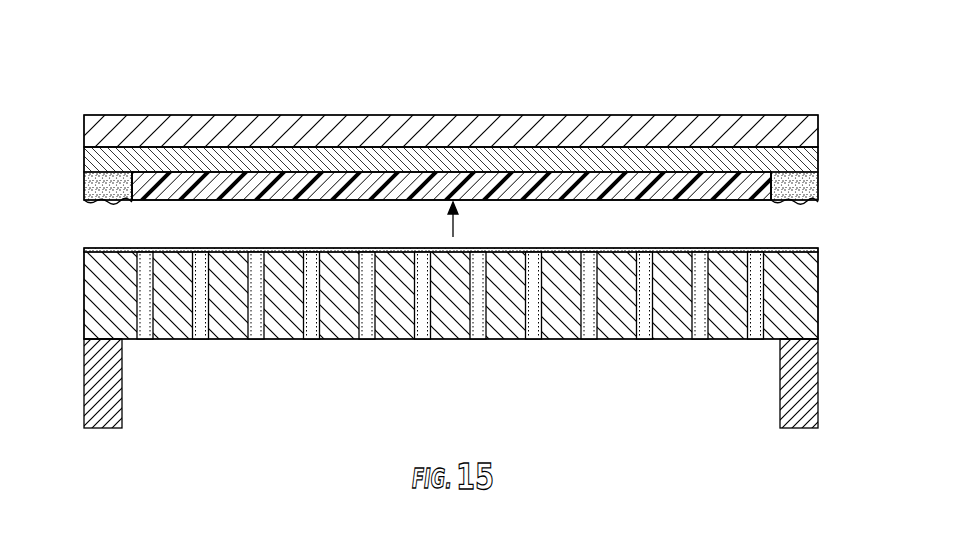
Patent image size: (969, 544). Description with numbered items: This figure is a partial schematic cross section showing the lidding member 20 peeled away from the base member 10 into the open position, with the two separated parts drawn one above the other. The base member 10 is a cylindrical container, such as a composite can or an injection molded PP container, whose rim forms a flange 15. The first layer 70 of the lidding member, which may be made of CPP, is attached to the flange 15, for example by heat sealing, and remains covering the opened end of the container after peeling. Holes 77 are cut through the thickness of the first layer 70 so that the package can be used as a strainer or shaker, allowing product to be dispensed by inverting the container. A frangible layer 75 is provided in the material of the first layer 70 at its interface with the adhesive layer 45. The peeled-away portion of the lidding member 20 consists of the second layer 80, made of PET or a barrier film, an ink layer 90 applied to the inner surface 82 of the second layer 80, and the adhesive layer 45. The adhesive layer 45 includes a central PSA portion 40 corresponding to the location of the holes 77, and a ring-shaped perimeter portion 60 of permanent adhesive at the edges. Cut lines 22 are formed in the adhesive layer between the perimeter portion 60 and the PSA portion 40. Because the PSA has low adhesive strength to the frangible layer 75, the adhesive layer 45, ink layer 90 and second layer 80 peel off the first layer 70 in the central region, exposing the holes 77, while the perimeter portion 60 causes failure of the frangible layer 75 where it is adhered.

The base member 10 is at (120, 382).
The flange 15 is at (75, 346).
The lidding member 20 is at (455, 124).
The cut lines 22 is at (128, 185).
The PSA portion 40 is at (557, 177).
The adhesive layer 45 is at (823, 172).
The perimeter portion 60 is at (90, 178).
The first layer 70 is at (427, 329).
The frangible layer 75 is at (431, 231).
The holes 77 is at (318, 325).
The second layer 80 is at (823, 115).
The inner surface 82 is at (462, 152).
The ink layer 90 is at (821, 162).